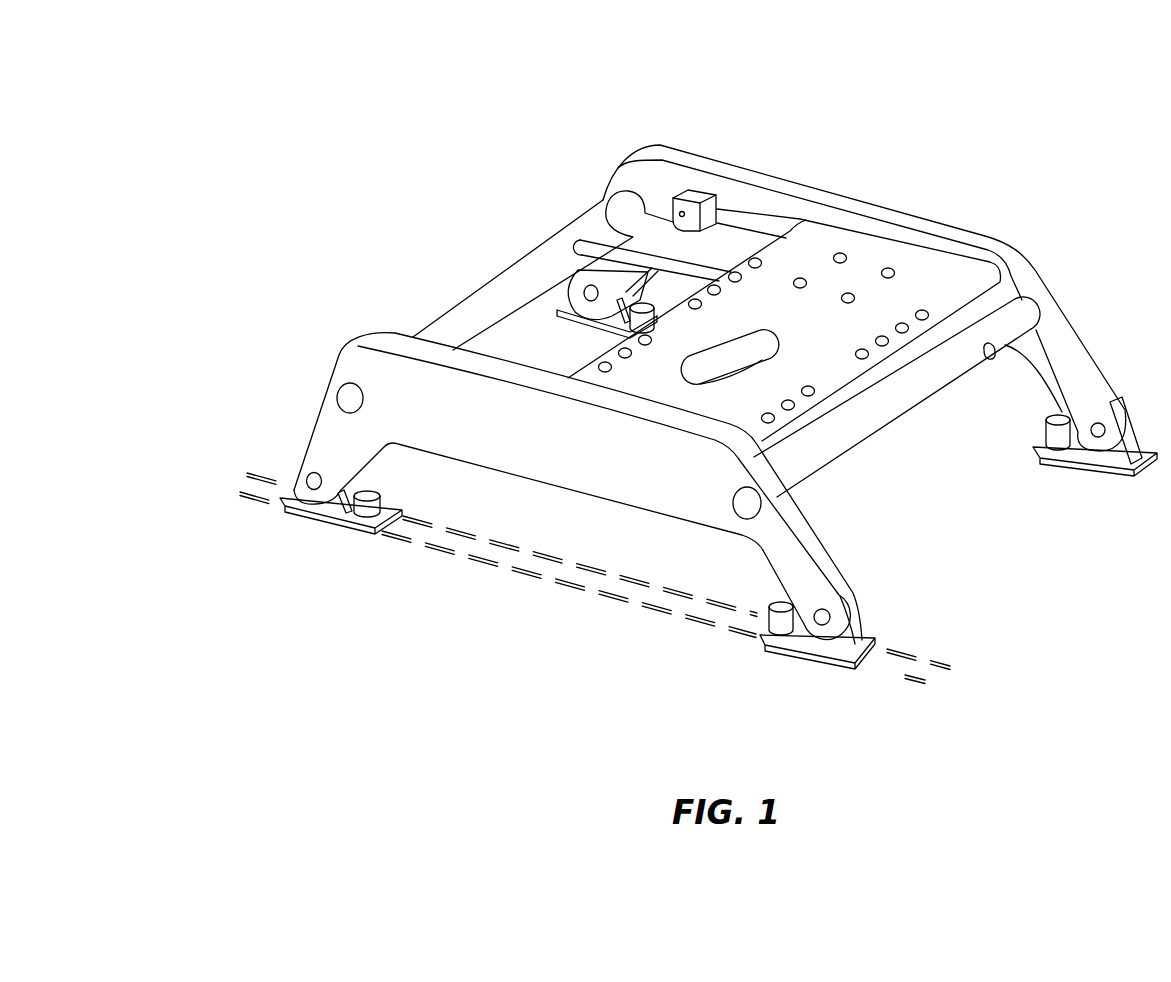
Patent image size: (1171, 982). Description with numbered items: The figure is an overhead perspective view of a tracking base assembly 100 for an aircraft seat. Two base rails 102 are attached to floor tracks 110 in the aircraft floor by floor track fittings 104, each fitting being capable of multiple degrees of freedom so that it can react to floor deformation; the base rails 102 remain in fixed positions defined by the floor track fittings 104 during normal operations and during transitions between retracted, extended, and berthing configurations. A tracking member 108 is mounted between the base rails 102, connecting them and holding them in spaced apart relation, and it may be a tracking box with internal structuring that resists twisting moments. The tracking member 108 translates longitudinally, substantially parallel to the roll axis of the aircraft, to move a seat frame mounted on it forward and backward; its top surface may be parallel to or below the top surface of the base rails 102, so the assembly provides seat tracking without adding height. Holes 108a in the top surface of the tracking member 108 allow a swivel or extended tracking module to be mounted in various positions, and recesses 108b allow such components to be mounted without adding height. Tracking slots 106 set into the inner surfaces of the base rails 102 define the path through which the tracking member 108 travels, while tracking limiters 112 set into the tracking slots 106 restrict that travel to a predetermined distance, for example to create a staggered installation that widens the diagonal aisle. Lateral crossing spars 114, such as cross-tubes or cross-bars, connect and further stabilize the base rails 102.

The tracking base assembly 100 is at (216, 112).
The base rails 102 is at (395, 338).
The floor track fittings 104 is at (867, 637).
The tracking slots 106 is at (740, 217).
The tracking member 108 is at (822, 240).
The holes 108a is at (903, 273).
The recesses 108b is at (740, 373).
The floor tracks 110 is at (563, 580).
The tracking limiters 112 is at (693, 217).
The lateral crossing spars 114 is at (887, 407).